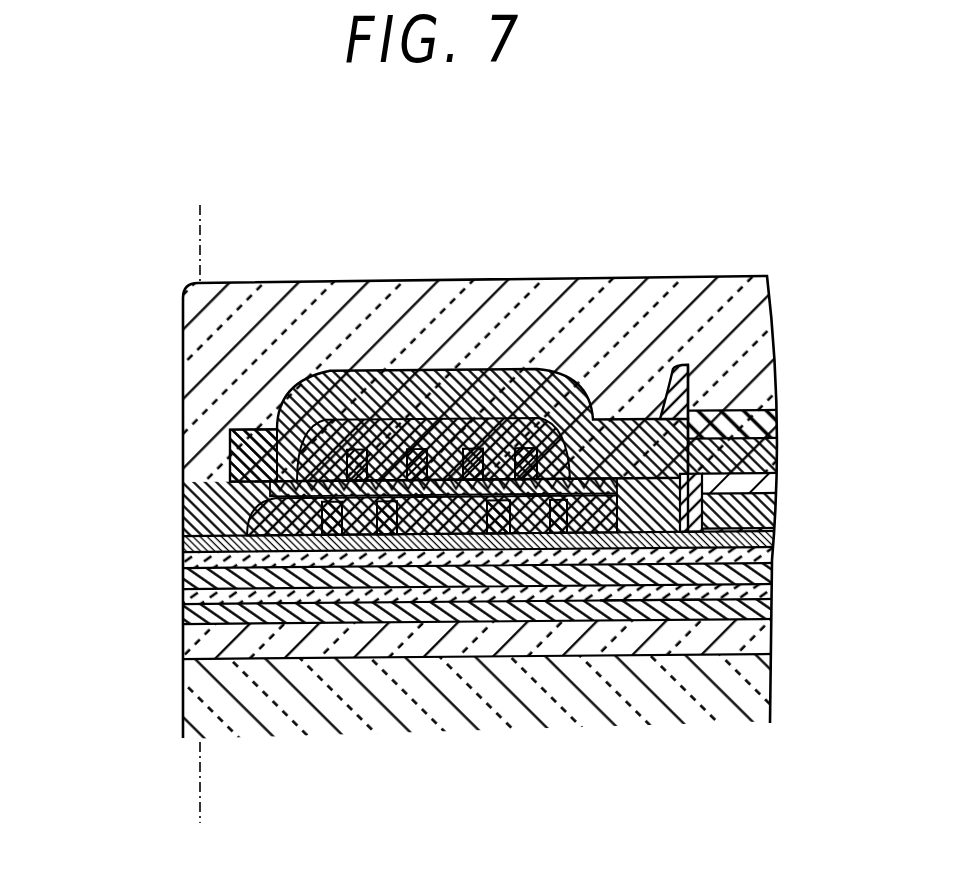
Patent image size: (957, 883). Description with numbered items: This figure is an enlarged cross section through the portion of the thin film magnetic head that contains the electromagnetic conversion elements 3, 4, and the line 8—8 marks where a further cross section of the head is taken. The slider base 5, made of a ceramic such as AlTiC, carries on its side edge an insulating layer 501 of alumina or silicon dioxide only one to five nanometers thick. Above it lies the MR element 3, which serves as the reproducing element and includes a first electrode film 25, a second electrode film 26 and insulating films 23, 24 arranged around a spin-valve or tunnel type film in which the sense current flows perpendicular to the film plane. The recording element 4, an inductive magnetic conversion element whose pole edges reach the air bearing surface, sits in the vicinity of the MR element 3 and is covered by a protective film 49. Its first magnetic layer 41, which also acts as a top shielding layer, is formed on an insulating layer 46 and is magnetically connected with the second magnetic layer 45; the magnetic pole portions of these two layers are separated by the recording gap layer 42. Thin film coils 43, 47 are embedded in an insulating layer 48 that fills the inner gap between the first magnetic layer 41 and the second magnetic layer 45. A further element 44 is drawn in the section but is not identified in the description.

The MR element 3 is at (183, 598).
The recording element 4 is at (216, 422).
The slider base 5 is at (738, 700).
The section line 8 is at (190, 810).
The insulating film 23 is at (488, 702).
The insulating film 24 is at (248, 600).
The first electrode film 25 is at (622, 603).
The second electrode film 26 is at (343, 585).
The first magnetic layer 41 is at (183, 550).
The recording gap layer 42 is at (391, 503).
The thin film coil 43 is at (444, 492).
The wiring layer 44 is at (500, 508).
The second magnetic layer 45 is at (503, 374).
The insulating layer 46 is at (688, 536).
The thin film coil 47 is at (403, 434).
The insulating layer 48 is at (447, 455).
The protective film 49 is at (292, 332).
The insulating layer 501 is at (553, 625).